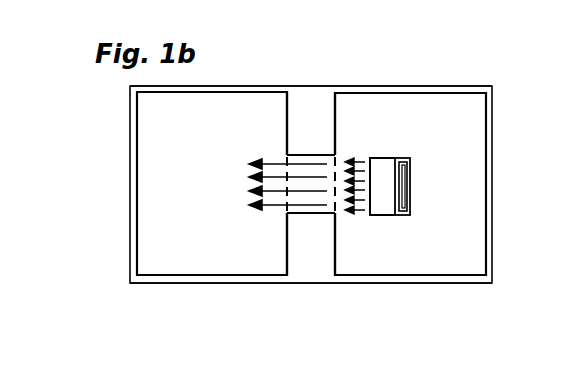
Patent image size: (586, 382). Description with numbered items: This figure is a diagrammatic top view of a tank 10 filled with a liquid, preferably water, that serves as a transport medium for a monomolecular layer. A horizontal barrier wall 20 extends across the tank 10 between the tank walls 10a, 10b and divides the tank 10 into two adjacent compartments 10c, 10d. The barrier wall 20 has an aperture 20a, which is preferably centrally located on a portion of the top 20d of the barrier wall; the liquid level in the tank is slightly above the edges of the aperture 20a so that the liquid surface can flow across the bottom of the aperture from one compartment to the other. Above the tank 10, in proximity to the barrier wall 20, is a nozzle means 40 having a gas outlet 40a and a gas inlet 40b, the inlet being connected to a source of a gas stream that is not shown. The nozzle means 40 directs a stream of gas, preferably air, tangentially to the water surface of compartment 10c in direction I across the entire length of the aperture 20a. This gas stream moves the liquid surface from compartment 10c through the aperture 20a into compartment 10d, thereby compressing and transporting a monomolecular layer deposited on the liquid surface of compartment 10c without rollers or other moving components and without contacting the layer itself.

The tank 10 is at (128, 251).
The tank wall 10a is at (408, 87).
The tank wall 10b is at (413, 284).
The compartment 10c is at (462, 190).
The compartment 10d is at (212, 183).
The barrier wall 20 is at (318, 270).
The aperture 20a is at (311, 172).
The top of the barrier wall 20d is at (311, 103).
The nozzle means 40 is at (386, 158).
The gas outlet 40a is at (370, 213).
The gas inlet 40b is at (408, 206).
The direction I is at (363, 168).